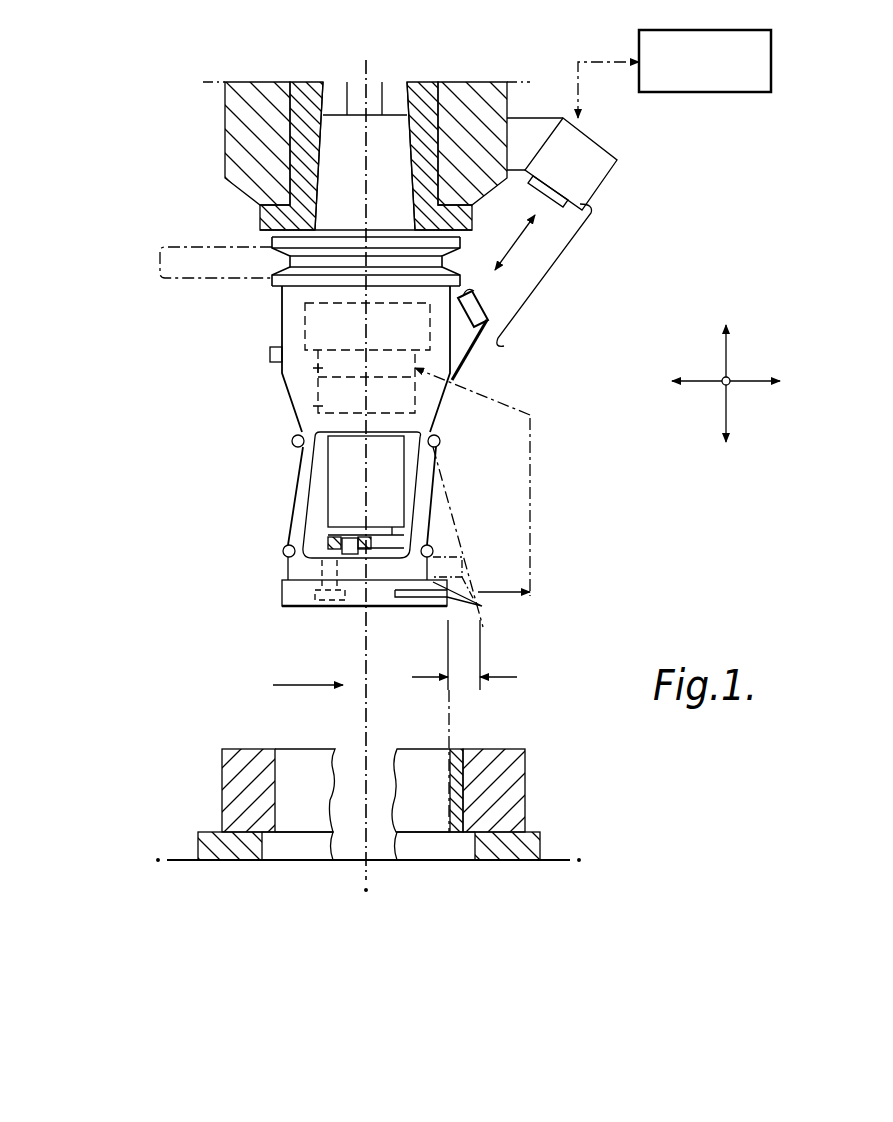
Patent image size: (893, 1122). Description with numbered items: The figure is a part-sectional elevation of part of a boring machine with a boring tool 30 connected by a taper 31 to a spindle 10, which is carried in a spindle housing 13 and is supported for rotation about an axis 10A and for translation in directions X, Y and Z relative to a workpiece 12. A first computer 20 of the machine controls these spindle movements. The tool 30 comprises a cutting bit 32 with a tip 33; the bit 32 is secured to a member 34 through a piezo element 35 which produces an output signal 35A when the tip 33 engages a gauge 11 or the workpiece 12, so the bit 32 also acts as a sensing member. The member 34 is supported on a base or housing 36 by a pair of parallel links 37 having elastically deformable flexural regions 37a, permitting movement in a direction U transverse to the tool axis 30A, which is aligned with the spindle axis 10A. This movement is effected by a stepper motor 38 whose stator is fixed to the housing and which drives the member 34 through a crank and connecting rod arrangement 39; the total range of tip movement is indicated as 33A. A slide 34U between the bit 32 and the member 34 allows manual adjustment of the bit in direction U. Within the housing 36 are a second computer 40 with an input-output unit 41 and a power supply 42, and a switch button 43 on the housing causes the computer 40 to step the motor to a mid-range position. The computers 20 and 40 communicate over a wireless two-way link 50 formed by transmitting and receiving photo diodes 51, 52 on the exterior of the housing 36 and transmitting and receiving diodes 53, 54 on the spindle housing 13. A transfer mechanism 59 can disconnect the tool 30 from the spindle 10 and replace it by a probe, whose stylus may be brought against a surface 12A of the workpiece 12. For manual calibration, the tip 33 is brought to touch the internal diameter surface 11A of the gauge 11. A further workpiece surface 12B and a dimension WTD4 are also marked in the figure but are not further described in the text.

The spindle housing 13 is at (260, 95).
The spindle 10 is at (313, 95).
The spindle axis 10A is at (367, 67).
The taper 31 is at (310, 160).
The first computer 20 is at (744, 82).
The transmitting diode 53 is at (592, 194).
The receiving diode 54 is at (582, 208).
The wireless two-way communication link 50 is at (544, 275).
The transmitting photo diode 51 is at (526, 334).
The receiving photo diode 52 is at (485, 302).
The transfer mechanism 59 is at (197, 263).
The housing 36 is at (282, 300).
The power supply 42 is at (305, 328).
The switch button 43 is at (270, 354).
The input-output unit 41 is at (318, 368).
The second computer 40 is at (318, 408).
The flexural regions 37a is at (300, 442).
The parallel links 37 is at (297, 479).
The boring tool 30 is at (437, 339).
The tool axis 30A is at (427, 480).
The stepper motor 38 is at (338, 512).
The output signal 35A is at (528, 557).
The crank and connecting rod arrangement 39 is at (293, 549).
The member 34 is at (295, 572).
The slide 34U is at (290, 596).
The piezo element 35 is at (410, 598).
The cutting bit 32 is at (420, 604).
The tip 33 is at (465, 615).
The total range of movement 33A is at (465, 683).
The gauge 11 is at (228, 791).
The internal diameter surface 11A is at (285, 760).
The workpiece 12 is at (517, 789).
The workpiece surface 12A is at (445, 780).
The workpiece layer 12B is at (462, 762).
The workpiece dimension WTD4 is at (455, 832).
The direction U is at (305, 685).
The direction X is at (734, 378).
The direction Y is at (734, 378).
The direction Z is at (745, 386).